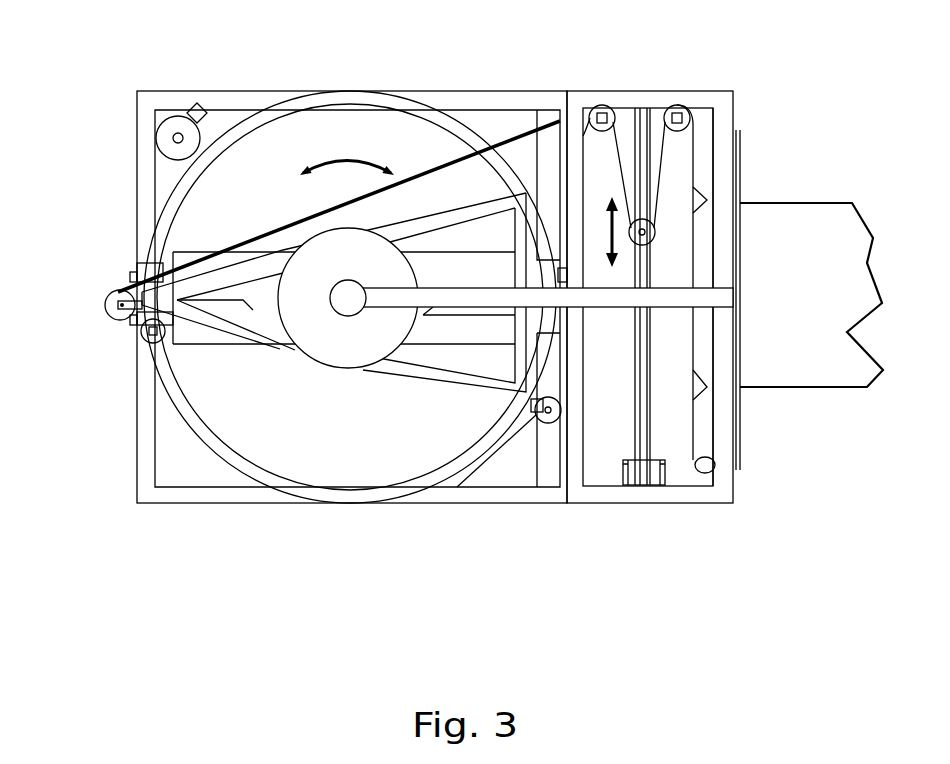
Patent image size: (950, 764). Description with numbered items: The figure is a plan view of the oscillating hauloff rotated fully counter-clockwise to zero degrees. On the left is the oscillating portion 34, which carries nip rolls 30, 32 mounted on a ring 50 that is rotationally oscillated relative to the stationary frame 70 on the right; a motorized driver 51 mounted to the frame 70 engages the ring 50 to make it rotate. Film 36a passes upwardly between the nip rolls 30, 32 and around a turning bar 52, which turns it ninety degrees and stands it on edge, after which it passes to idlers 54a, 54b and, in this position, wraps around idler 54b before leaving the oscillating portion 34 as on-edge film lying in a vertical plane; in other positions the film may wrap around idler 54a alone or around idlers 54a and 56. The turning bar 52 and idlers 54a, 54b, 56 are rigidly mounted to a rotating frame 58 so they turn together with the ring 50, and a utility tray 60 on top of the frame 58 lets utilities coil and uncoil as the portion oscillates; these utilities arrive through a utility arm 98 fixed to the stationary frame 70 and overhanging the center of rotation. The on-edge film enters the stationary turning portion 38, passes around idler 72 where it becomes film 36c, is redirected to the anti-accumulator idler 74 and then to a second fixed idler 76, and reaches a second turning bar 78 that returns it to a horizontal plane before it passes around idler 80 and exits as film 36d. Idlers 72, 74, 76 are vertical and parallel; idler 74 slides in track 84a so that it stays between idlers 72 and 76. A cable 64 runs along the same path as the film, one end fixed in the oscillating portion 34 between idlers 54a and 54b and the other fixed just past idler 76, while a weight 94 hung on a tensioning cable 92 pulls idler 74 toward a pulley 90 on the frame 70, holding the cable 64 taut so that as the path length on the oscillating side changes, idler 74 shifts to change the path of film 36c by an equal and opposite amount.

The nip roll 30 is at (294, 249).
The nip roll 32 is at (170, 372).
The oscillating portion 34 is at (352, 268).
The film 36a is at (281, 368).
The film 36c is at (784, 297).
The film 36d is at (826, 285).
The stationary turning portion 38 is at (627, 268).
The ring 50 is at (350, 314).
The motorized driver 51 is at (147, 111).
The turning bar 52 is at (146, 349).
The idler 54a is at (91, 343).
The idler 54b is at (76, 312).
The idler 56 is at (502, 467).
The frame 58 is at (430, 373).
The utility tray 60 is at (265, 382).
The cable 64 is at (311, 206).
The stationary frame 70 is at (610, 339).
The idler 72 is at (644, 120).
The anti-accumulator idler 74 is at (727, 189).
The idler 76 is at (719, 144).
The turning bar 78 is at (750, 295).
The idler 80 is at (798, 300).
The track 84a is at (697, 260).
The pulley 90 is at (703, 507).
The tensioning cable 92 is at (725, 320).
The weight 94 is at (676, 518).
The utility arm 98 is at (601, 349).